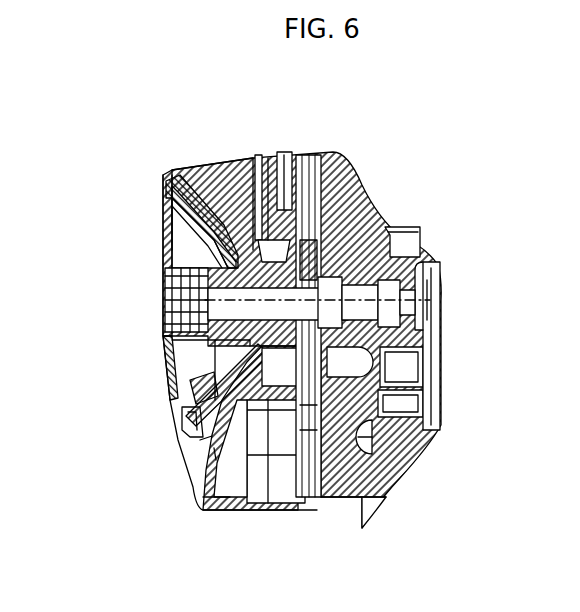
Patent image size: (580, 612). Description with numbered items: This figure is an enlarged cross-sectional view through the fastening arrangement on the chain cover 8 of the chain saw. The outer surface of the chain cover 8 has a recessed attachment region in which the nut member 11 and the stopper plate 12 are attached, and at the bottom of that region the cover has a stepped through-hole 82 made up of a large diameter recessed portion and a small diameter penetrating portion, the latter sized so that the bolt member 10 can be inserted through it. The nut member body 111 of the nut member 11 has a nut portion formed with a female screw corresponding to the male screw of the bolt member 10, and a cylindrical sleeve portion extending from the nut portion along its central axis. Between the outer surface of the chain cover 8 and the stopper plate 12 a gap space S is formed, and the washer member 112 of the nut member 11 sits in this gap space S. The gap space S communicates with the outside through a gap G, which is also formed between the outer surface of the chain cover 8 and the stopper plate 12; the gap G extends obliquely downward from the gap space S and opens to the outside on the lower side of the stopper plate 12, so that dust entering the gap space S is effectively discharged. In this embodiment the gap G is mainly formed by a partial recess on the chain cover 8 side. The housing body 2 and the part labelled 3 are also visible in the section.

The housing 2 is at (368, 212).
The chain cover 8 is at (203, 490).
The bolt member 10 is at (180, 322).
The nut member 11 is at (190, 341).
The gap space S is at (200, 387).
The stopper plate 12 is at (195, 412).
The gap G is at (205, 442).
The stepped through-hole 82 is at (303, 200).
The shaft 3 is at (309, 405).
The nut member body 111 is at (222, 260).
The washer member 112 is at (187, 178).